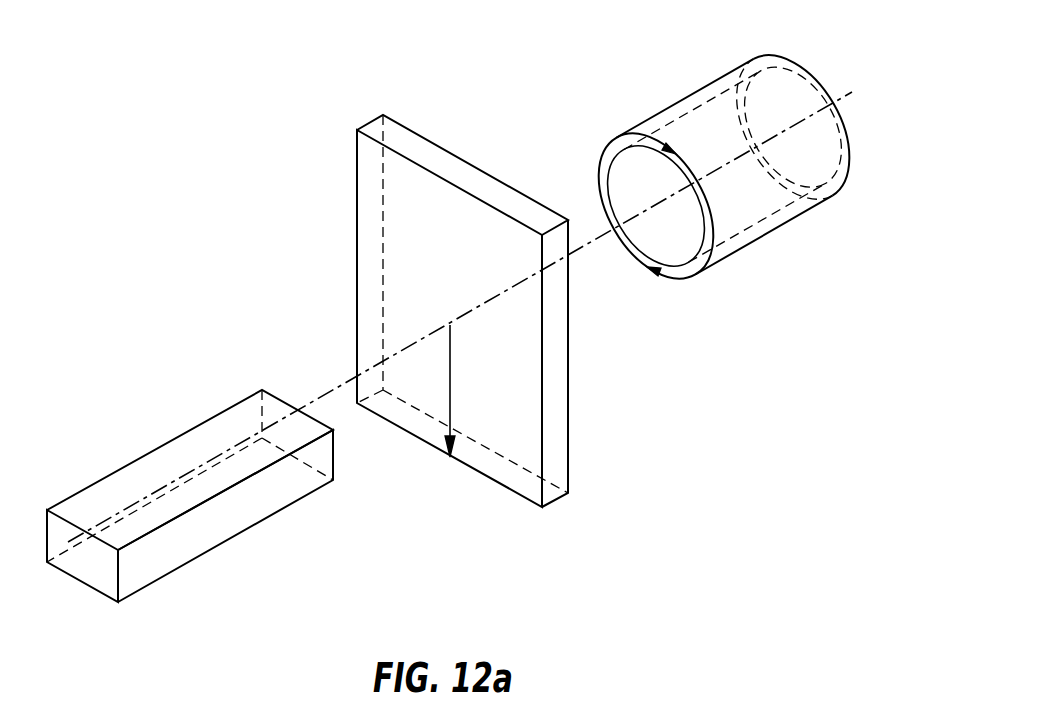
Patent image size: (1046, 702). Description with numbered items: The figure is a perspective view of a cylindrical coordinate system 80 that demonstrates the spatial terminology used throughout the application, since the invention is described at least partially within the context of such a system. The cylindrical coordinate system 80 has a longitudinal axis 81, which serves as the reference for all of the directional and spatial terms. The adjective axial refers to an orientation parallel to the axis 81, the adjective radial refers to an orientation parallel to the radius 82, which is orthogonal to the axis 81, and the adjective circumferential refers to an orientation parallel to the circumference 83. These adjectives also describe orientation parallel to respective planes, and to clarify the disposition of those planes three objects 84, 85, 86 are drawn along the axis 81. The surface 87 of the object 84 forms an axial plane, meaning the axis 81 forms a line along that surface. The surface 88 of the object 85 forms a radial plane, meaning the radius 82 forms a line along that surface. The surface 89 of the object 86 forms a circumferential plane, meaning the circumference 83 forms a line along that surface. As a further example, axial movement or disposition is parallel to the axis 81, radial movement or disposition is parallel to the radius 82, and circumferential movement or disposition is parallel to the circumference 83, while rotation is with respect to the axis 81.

The cylindrical coordinate system 80 is at (305, 172).
The longitudinal axis 81 is at (842, 100).
The radius 82 is at (450, 382).
The circumference 83 is at (600, 160).
The object 84 is at (190, 528).
The object 85 is at (465, 335).
The object 86 is at (757, 243).
The surface 87 is at (143, 473).
The surface 88 is at (373, 263).
The surface 89 is at (678, 173).